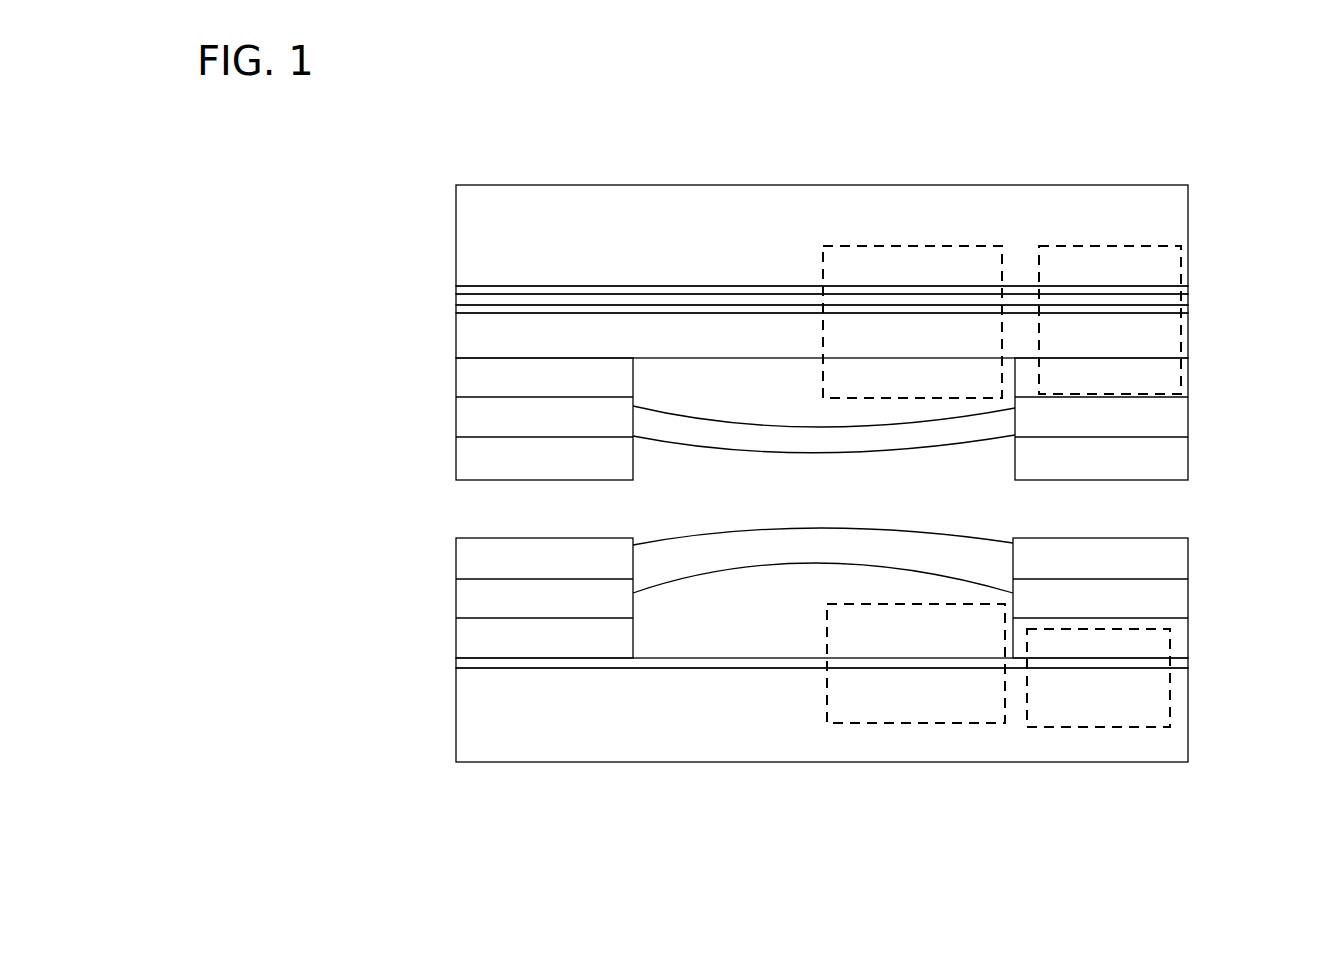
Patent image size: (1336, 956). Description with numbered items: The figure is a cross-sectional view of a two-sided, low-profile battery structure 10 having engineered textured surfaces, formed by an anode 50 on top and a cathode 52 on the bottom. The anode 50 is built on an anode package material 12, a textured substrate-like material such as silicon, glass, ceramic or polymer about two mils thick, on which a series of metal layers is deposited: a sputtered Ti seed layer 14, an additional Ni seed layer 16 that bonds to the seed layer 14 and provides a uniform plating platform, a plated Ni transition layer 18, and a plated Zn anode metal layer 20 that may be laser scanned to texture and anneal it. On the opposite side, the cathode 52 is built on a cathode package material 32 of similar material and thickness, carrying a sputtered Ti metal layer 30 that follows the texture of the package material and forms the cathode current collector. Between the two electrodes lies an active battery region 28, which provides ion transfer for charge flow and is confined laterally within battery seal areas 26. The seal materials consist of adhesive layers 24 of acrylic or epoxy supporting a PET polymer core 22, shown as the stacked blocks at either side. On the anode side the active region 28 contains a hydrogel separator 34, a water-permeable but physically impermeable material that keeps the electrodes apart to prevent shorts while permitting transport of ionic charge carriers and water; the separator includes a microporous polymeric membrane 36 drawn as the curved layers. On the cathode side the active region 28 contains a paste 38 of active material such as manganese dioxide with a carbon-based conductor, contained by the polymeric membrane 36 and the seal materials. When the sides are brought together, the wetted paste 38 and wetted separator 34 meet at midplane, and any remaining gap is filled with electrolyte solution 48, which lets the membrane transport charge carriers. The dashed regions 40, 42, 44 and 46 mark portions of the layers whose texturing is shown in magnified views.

The battery structure 10 is at (624, 86).
The anode package material 12 is at (480, 220).
The seed layer 14 is at (458, 289).
The additional seed layer 16 is at (460, 300).
The transition layer 18 is at (474, 310).
The anode metal layer 20 is at (522, 342).
The polymer core 22 is at (478, 427).
The adhesive layer 24 is at (478, 388).
The battery seal area 26 is at (822, 509).
The active battery region 28 is at (887, 457).
The metal layer 30 is at (464, 668).
The cathode package material 32 is at (500, 742).
The hydrogel separator 34 is at (744, 406).
The polymeric membrane 36 is at (932, 553).
The paste 38 is at (744, 629).
The region 40 is at (917, 240).
The region 42 is at (915, 728).
The region 44 is at (1082, 244).
The region 46 is at (1110, 731).
The electrolyte solution 48 is at (693, 501).
The anode 50 is at (1213, 308).
The cathode 52 is at (1227, 620).